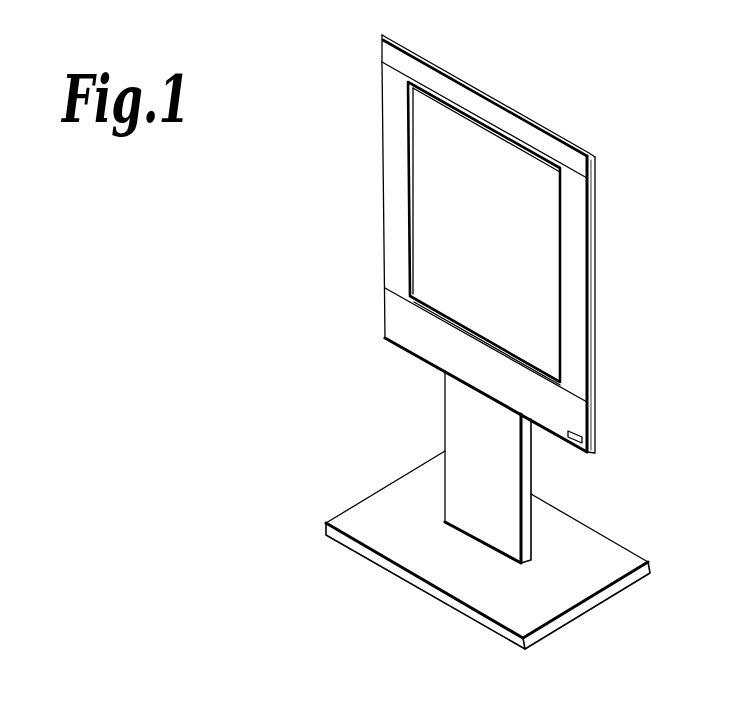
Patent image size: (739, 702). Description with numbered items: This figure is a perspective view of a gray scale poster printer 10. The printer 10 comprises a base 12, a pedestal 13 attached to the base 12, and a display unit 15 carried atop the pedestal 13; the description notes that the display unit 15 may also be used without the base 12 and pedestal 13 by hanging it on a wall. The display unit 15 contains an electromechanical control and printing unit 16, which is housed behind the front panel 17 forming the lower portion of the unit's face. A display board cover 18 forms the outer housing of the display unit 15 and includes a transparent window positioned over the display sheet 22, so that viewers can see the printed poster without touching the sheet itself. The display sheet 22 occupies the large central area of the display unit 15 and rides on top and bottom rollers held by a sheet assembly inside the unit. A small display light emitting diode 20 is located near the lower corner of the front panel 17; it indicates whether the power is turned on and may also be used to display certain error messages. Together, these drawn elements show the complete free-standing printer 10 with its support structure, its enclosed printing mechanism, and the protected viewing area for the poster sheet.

The gray scale poster printer 10 is at (500, 244).
The base 12 is at (634, 551).
The support column 13 is at (534, 466).
The display unit 15 is at (513, 244).
The electromechanical control and printing unit 16 is at (386, 341).
The front panel 17 is at (486, 345).
The display board cover 18 is at (581, 315).
The indicator light 20 is at (582, 434).
The display sheet 22 is at (484, 233).